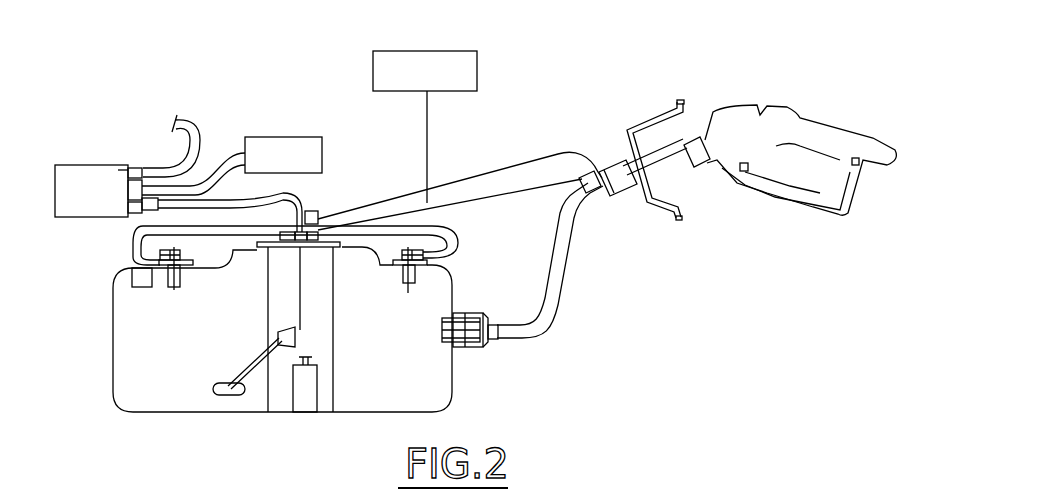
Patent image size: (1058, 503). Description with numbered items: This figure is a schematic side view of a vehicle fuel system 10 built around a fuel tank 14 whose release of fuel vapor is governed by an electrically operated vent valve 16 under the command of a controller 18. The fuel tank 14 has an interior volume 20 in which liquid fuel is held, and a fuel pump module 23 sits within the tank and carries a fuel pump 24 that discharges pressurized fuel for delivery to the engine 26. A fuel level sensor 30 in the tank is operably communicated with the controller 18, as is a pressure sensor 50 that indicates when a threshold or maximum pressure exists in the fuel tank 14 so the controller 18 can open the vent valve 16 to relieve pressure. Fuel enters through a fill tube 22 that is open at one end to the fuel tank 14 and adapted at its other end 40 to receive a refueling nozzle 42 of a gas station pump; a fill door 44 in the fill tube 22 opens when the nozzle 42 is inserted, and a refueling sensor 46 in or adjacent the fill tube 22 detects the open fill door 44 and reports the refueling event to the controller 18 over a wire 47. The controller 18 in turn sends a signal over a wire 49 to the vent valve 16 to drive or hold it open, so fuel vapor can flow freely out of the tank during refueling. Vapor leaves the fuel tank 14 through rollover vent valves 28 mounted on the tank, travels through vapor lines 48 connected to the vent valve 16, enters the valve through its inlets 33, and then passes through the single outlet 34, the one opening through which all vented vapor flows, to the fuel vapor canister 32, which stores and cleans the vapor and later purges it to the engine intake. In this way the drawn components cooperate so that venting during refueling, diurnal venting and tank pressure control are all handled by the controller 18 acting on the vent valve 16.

The fuel system 10 is at (215, 80).
The fuel tank 14 is at (140, 413).
The electrically operated vent valve 16 is at (318, 211).
The controller 18 is at (478, 71).
The interior volume 20 is at (153, 391).
The fill tube 22 is at (568, 266).
The fuel pump module 23 is at (334, 335).
The fuel pump 24 is at (293, 388).
The engine 26 is at (275, 137).
The rollover vent valve 28 is at (172, 290).
The fuel level sensor 30 is at (223, 397).
The fuel vapor canister 32 is at (113, 218).
The inlet 33 is at (282, 240).
The outlet 34 is at (296, 208).
The end of fill tube 40 is at (624, 156).
The refueling nozzle 42 is at (742, 102).
The fill door 44 is at (603, 194).
The refueling sensor 46 is at (582, 176).
The wire 47 is at (572, 151).
The vapor line 48 is at (128, 254).
The wire 49 is at (428, 158).
The pressure sensor 50 is at (133, 270).